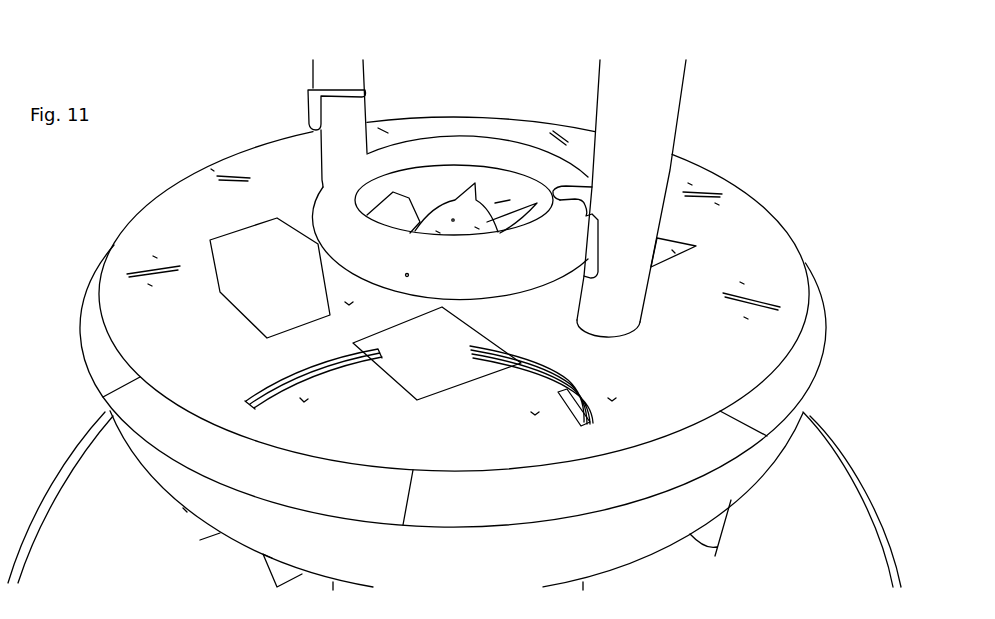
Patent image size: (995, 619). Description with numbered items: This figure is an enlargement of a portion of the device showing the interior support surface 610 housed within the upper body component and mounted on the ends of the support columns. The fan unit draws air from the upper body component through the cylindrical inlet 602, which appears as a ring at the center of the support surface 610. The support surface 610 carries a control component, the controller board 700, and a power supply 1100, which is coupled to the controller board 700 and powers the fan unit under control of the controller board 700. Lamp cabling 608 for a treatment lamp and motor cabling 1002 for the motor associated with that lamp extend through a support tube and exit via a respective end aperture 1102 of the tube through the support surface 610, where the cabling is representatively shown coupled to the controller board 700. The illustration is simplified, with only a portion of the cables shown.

The interior support surface 610 is at (681, 381).
The cylindrical inlet 602 is at (493, 273).
The power supply 1100 is at (296, 281).
The controller board 700 is at (436, 363).
The motor cabling 1002 is at (518, 359).
The lamp cabling 608 is at (521, 366).
The end aperture 1102 is at (567, 419).